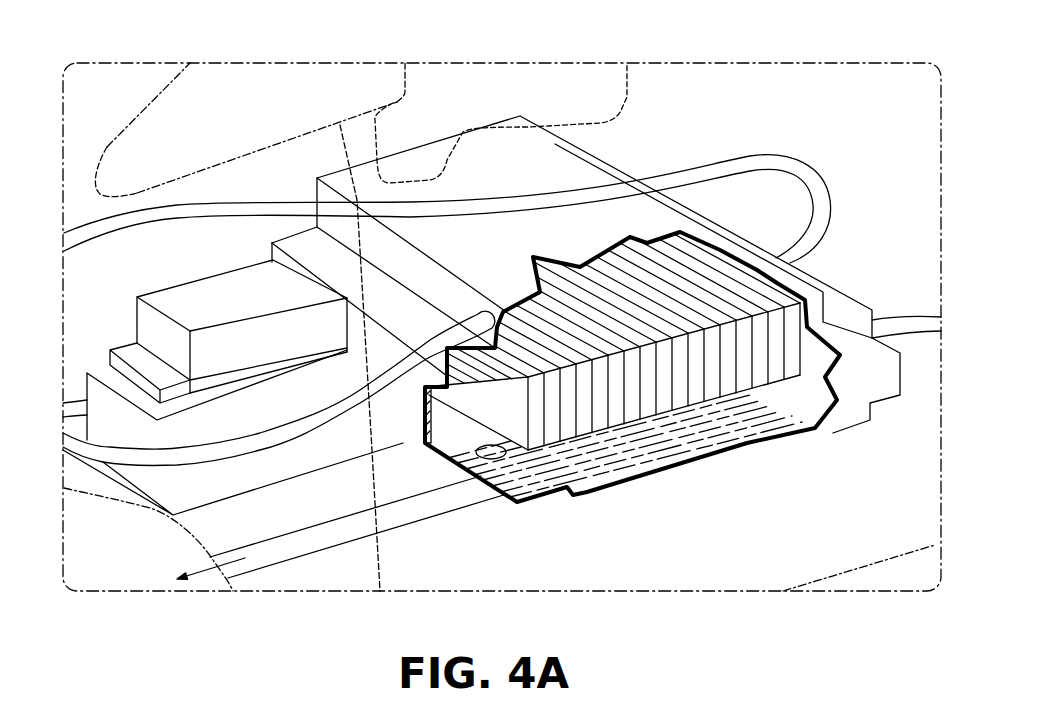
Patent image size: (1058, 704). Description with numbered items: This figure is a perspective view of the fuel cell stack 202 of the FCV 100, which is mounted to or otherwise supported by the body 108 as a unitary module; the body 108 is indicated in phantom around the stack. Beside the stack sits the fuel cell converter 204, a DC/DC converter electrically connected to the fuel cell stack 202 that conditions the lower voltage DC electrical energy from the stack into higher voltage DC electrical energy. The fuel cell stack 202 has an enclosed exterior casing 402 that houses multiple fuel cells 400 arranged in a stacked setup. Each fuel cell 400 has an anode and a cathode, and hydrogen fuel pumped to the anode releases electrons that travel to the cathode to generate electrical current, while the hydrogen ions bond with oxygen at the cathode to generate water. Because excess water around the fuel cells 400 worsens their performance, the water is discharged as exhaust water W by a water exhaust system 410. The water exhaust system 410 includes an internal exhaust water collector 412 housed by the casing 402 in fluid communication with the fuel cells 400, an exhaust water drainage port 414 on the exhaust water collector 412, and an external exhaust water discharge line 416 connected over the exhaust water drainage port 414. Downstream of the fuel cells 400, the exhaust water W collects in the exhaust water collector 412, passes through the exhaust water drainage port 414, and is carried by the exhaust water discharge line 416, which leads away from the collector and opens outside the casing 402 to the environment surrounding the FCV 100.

The FCV 100 is at (659, 82).
The body 108 is at (677, 523).
The fuel cell stack 202 is at (707, 240).
The fuel cell converter 204 is at (199, 303).
The fuel cells 400 is at (725, 380).
The casing 402 is at (528, 240).
The water exhaust system 410 is at (425, 418).
The exhaust water collector 412 is at (582, 453).
The exhaust water drainage port 414 is at (479, 452).
The exhaust water discharge line 416 is at (399, 531).
The exhaust water W is at (725, 438).